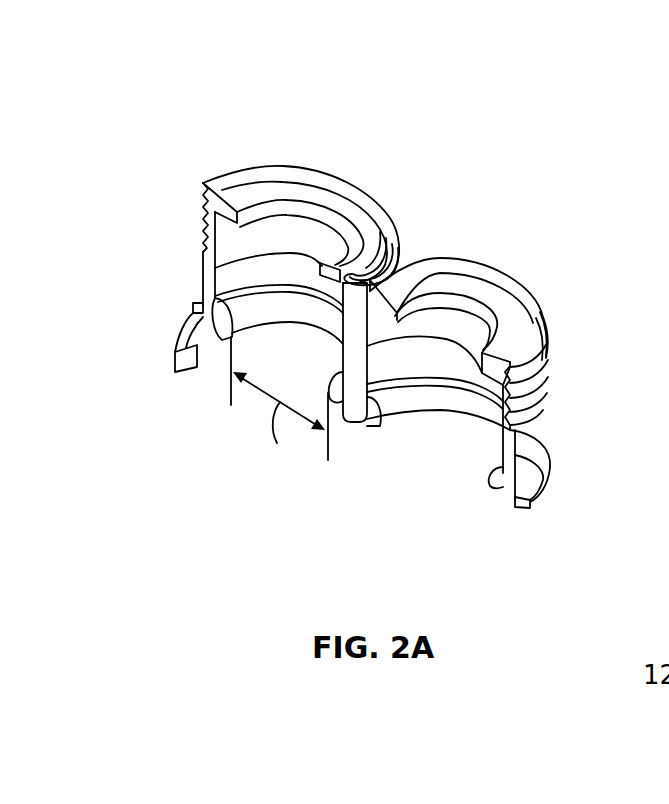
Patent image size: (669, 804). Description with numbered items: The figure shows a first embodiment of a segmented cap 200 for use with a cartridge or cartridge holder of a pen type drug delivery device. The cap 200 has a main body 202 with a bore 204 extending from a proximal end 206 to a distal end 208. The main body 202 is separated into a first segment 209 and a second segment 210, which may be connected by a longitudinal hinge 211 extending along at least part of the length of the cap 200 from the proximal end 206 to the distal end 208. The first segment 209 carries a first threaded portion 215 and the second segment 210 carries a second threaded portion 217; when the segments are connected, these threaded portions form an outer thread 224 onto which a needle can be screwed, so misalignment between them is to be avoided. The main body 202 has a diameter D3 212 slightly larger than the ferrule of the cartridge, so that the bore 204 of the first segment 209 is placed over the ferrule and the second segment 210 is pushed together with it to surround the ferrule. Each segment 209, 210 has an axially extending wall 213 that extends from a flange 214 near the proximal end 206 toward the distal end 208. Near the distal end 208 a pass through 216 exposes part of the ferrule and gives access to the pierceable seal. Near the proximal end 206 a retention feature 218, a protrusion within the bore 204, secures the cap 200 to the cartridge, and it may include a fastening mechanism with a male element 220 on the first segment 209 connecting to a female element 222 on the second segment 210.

The segmented cap 200 is at (523, 146).
The main body 202 is at (530, 437).
The bore 204 is at (238, 238).
The proximal end 206 is at (159, 385).
The distal end 208 is at (222, 156).
The first segment 209 is at (333, 187).
The second segment 210 is at (473, 270).
The longitudinal hinge 211 is at (387, 272).
The diameter D3 212 is at (284, 483).
The axially extending wall 213 is at (527, 457).
The flange 214 is at (535, 490).
The first threaded portion 215 is at (207, 199).
The pass through 216 is at (462, 323).
The second threaded portion 217 is at (522, 394).
The retention feature 218 is at (422, 400).
The male element 220 is at (190, 370).
The female element 222 is at (500, 510).
The outer thread 224 is at (545, 347).